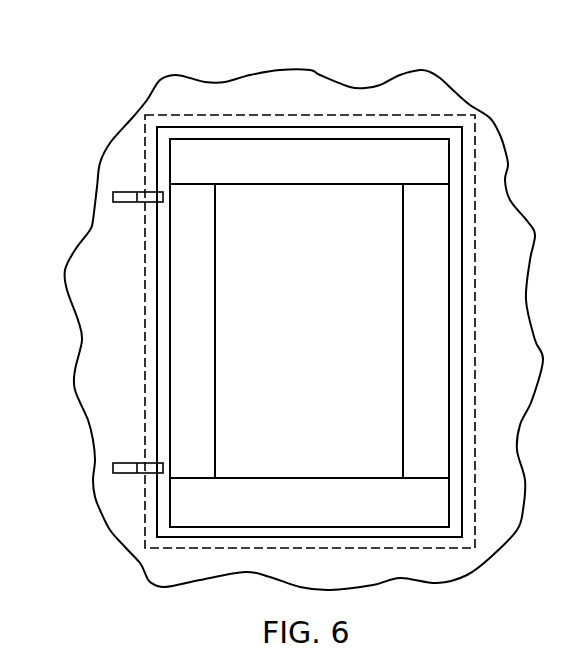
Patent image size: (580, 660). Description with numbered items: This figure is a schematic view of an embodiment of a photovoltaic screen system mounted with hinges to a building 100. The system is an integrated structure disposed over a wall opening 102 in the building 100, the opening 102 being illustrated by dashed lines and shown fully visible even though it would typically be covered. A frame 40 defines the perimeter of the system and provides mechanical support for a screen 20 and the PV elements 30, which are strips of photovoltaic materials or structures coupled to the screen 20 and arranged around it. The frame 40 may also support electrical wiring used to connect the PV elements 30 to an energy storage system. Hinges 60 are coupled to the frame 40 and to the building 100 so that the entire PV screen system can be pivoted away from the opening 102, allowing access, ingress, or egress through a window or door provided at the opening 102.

The building 100 is at (423, 92).
The wall opening 102 is at (165, 550).
The frame 40 is at (163, 304).
The PV elements 30 is at (260, 145).
The screen 20 is at (243, 233).
The hinges 60 is at (127, 192).